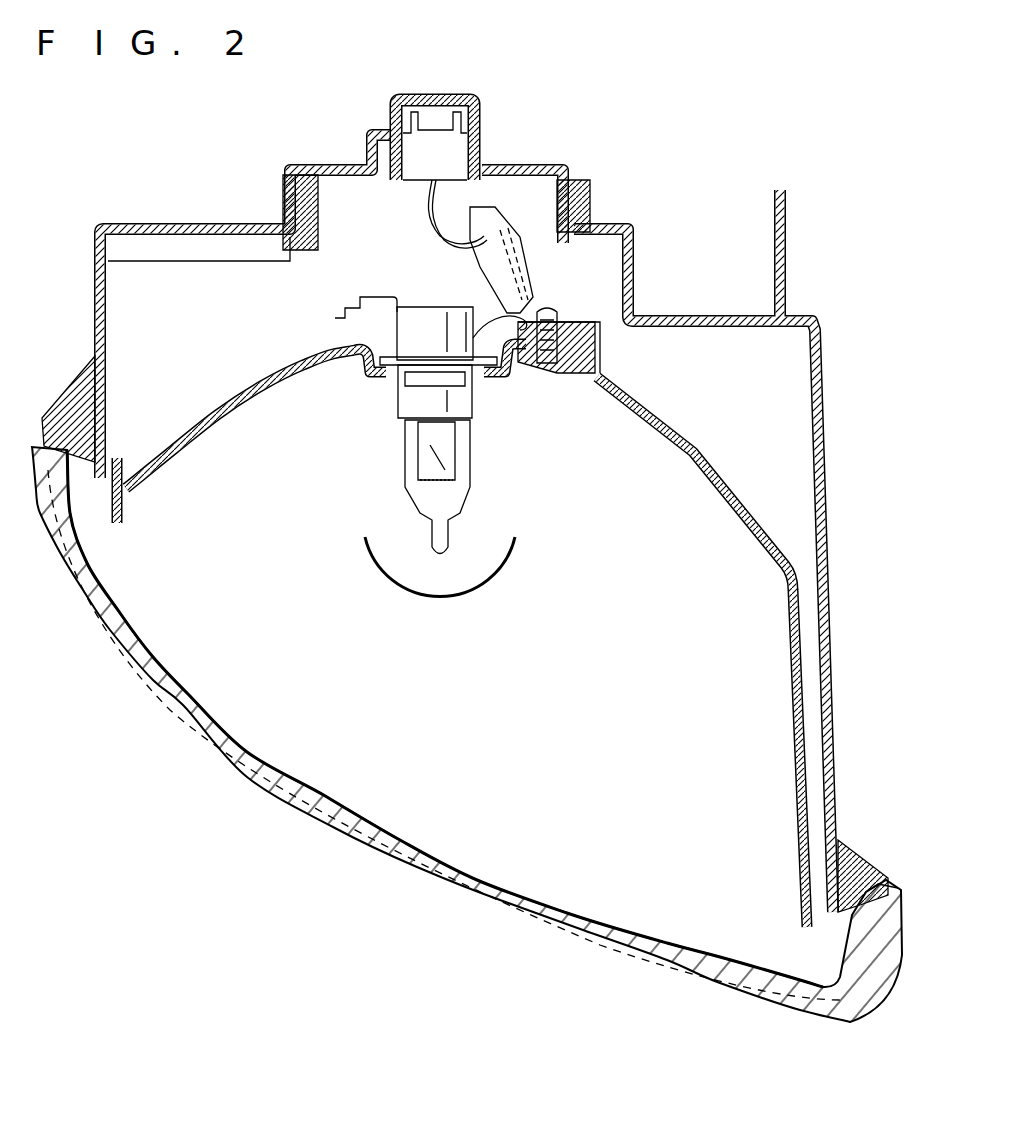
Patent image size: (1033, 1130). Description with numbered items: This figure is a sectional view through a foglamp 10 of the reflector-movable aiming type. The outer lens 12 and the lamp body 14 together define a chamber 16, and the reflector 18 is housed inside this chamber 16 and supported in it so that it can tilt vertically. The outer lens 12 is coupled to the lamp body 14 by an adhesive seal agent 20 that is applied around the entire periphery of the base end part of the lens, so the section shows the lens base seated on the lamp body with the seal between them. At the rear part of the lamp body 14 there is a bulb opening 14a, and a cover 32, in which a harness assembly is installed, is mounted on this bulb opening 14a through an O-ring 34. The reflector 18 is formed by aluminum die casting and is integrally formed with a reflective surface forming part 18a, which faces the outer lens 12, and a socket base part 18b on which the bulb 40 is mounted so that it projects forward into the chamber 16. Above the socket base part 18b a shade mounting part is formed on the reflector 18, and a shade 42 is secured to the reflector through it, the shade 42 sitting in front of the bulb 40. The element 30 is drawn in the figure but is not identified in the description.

The foglamp 10 is at (684, 186).
The outer lens 12 is at (496, 912).
The lamp body 14 is at (828, 440).
The bulb opening 14a is at (296, 252).
The chamber 16 is at (503, 726).
The reflector 18 is at (674, 420).
The reflective surface forming part 18a is at (226, 396).
The socket base part 18b is at (382, 378).
The adhesive seal agent 20 is at (884, 880).
The cable 30 is at (428, 188).
The cover 32 is at (468, 92).
The O-ring 34 is at (285, 212).
The bulb 40 is at (475, 461).
The shade 42 is at (506, 565).